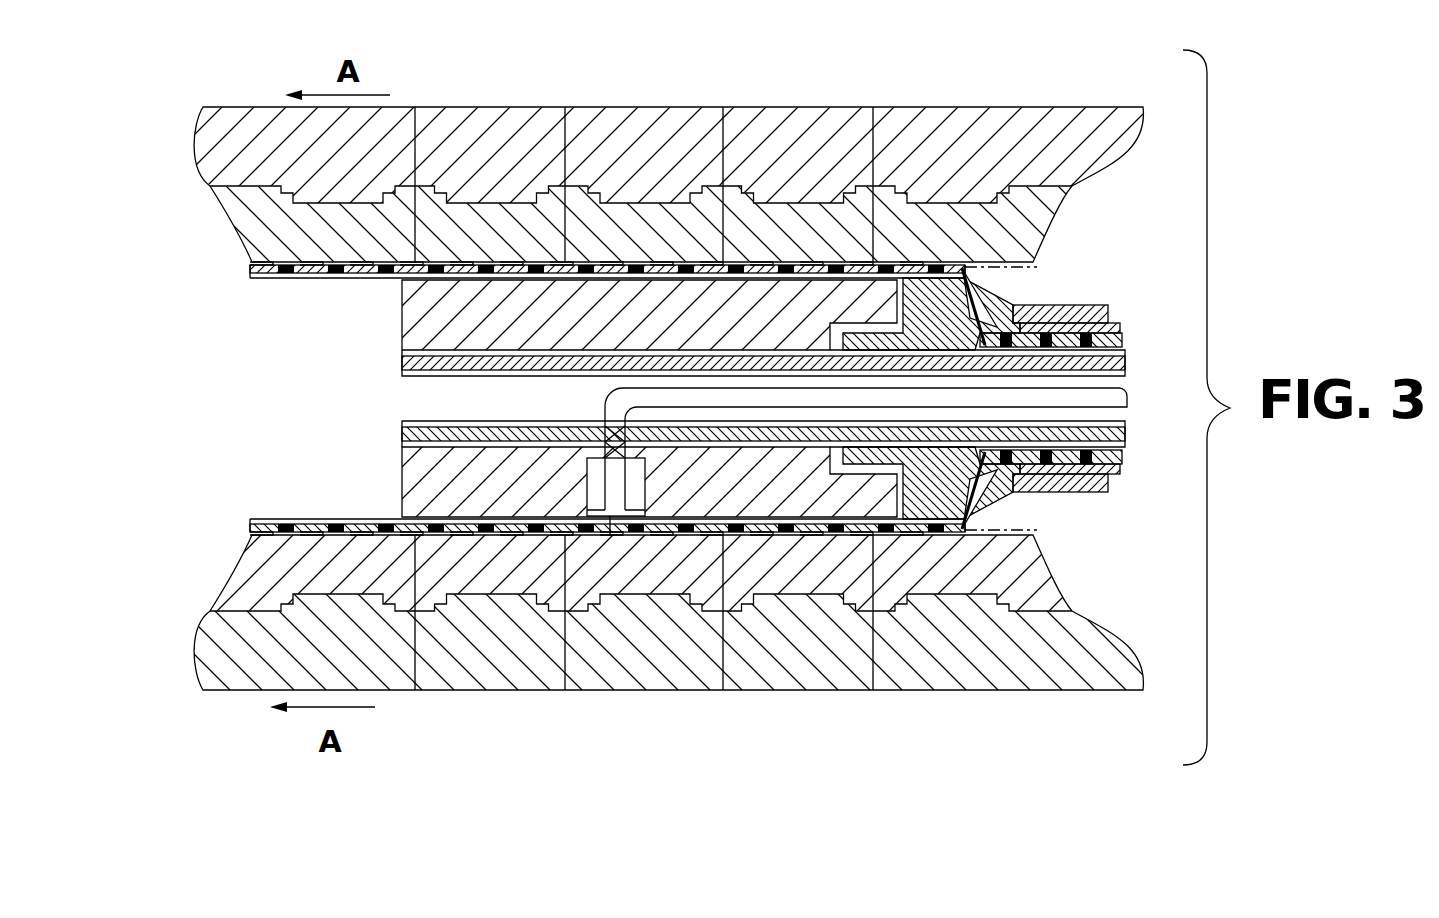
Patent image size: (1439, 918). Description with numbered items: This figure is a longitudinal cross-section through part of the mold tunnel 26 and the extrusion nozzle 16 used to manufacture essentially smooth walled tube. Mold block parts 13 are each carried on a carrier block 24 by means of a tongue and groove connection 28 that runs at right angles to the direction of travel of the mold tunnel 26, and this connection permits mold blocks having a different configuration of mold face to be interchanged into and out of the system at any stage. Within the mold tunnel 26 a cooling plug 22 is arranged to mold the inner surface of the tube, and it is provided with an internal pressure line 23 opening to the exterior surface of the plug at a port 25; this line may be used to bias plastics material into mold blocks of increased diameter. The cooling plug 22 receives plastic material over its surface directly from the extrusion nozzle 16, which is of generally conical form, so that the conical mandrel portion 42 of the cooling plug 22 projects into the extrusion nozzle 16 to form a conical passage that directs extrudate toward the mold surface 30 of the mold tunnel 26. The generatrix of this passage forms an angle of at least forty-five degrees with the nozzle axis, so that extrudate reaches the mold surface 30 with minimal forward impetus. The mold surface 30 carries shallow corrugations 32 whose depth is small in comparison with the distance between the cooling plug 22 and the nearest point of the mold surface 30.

The mold block parts 13 is at (933, 217).
The extrusion nozzle 16 is at (965, 276).
The cooling plug 22 is at (405, 456).
The internal pressure line 23 is at (1114, 394).
The carrier block 24 is at (257, 128).
The port 25 is at (611, 520).
The mold tunnel 26 is at (862, 713).
The tongue and groove connection 28 is at (653, 195).
The mold surface 30 is at (325, 262).
The corrugations 32 is at (515, 258).
The conical mandrel portion 42 is at (997, 306).